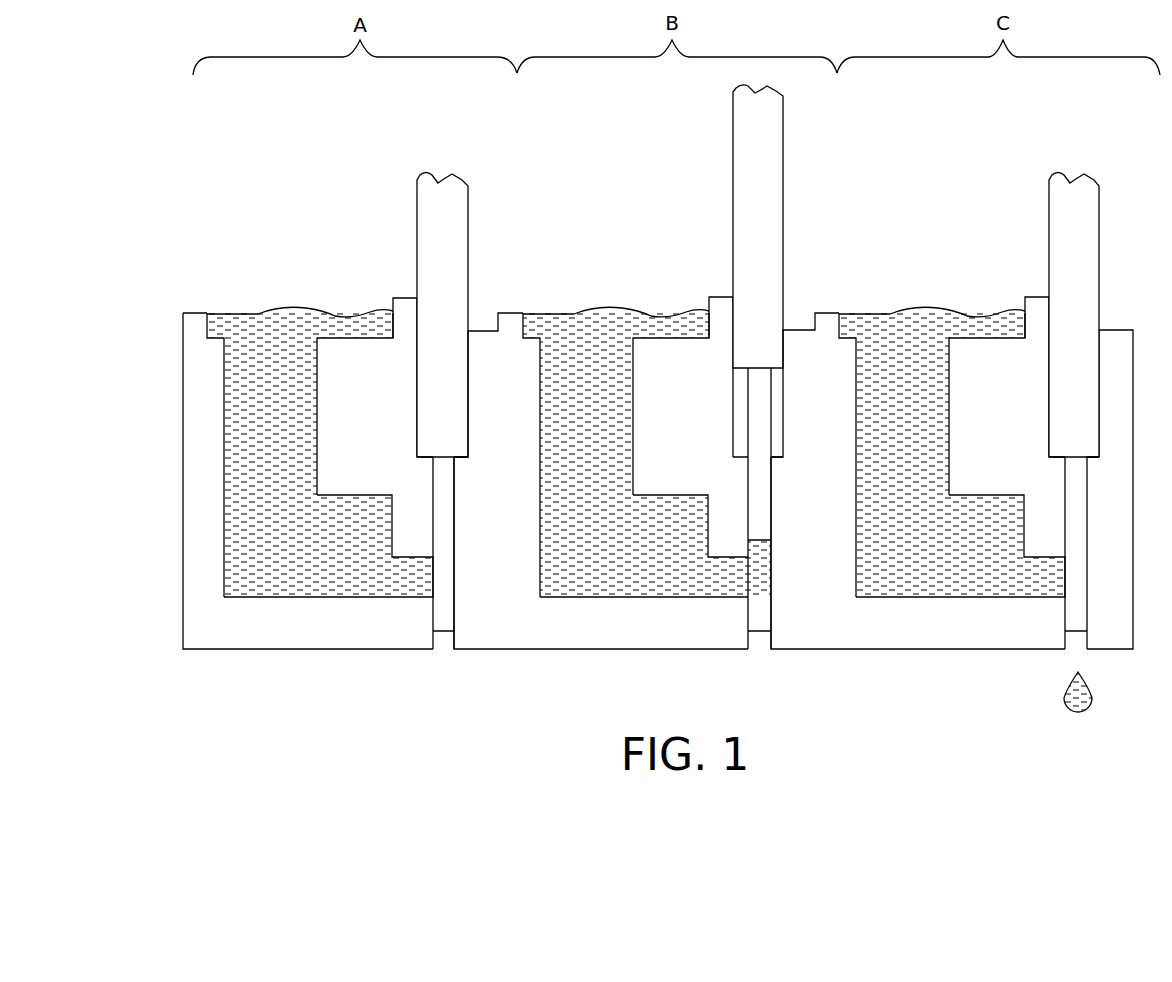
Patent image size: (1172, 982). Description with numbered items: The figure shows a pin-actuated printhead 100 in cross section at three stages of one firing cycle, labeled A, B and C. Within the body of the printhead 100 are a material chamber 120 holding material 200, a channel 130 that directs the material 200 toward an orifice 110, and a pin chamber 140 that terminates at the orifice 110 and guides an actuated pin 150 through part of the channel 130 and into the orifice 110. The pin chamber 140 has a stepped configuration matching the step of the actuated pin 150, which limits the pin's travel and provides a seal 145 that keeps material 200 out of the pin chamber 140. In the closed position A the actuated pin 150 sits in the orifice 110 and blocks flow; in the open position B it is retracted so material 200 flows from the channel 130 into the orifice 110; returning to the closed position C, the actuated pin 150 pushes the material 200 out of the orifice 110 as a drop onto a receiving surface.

The printhead 100 is at (314, 166).
The orifice 110 is at (444, 648).
The material chamber 120 is at (266, 352).
The channel 130 is at (380, 578).
The pin chamber 140 is at (478, 316).
The seal 145 is at (403, 464).
The actuated pin 150 is at (449, 178).
The material 200 is at (1064, 697).